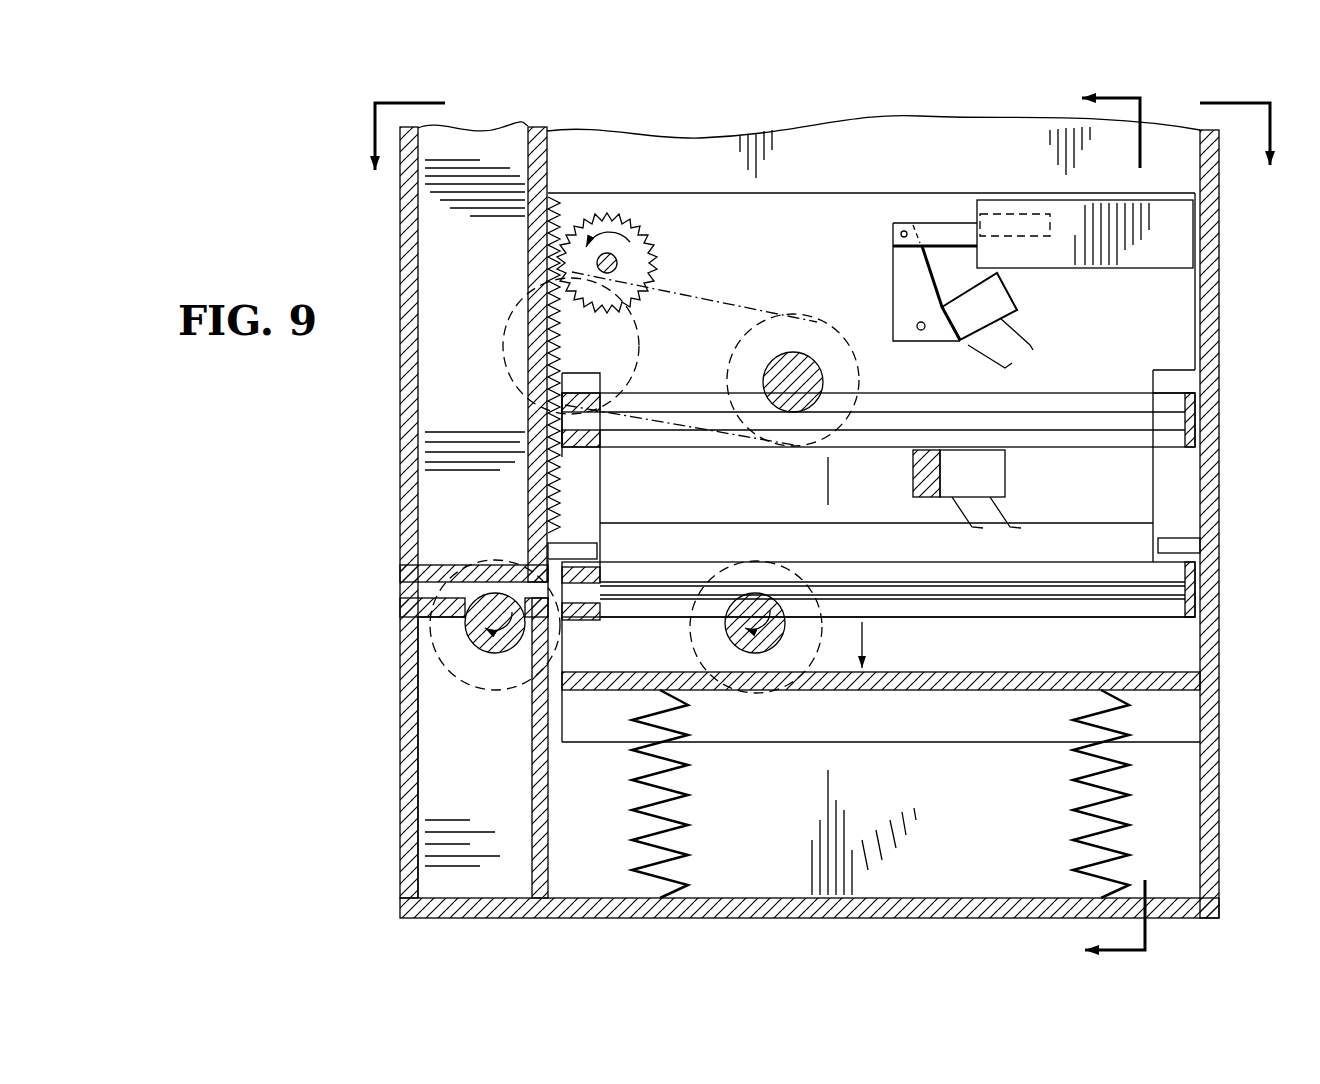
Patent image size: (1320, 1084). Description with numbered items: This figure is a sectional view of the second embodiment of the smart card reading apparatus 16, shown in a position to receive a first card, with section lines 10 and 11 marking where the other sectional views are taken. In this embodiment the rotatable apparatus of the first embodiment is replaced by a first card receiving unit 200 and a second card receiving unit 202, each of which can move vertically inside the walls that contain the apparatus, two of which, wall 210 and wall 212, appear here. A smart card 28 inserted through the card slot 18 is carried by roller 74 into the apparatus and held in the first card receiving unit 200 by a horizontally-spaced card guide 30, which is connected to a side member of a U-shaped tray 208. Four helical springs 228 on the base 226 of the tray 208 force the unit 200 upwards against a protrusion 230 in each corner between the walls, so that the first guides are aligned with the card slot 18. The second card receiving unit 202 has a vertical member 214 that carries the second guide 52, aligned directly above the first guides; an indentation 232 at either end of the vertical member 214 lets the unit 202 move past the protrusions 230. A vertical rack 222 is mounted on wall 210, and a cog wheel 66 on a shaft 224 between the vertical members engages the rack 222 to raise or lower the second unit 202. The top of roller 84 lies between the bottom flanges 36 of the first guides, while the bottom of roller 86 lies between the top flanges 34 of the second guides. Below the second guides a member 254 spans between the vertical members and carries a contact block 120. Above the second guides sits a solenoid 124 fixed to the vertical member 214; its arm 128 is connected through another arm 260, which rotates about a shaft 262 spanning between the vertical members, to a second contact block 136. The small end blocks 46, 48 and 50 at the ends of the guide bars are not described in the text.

The section line 10- 10 is at (1095, 524).
The section line 11- 11 is at (823, 151).
The card reading apparatus 16 is at (700, 140).
The card slot 18 is at (398, 590).
The smart card 28 is at (920, 590).
The card guide 30 is at (1000, 622).
The top flange 34 is at (1027, 395).
The bottom flange 36 is at (1085, 440).
The bracket 46 is at (590, 398).
The end block 48 is at (605, 445).
The end block 50 is at (1195, 410).
The second guide 52 is at (1095, 393).
The cog wheel 66 is at (645, 250).
The roller 74 is at (483, 662).
The roller 84 is at (735, 628).
The roller 86 is at (766, 375).
The contact block 120 is at (993, 473).
The solenoid 124 is at (1110, 262).
The arm 128 is at (895, 232).
The contact block 136 is at (1000, 300).
The first card receiving unit 200 is at (1170, 643).
The second card receiving unit 202 is at (812, 192).
The U-shaped tray 208 is at (963, 695).
The wall 210 is at (548, 170).
The wall 212 is at (1213, 298).
The vertical member 214 is at (918, 194).
The vertical rack 222 is at (560, 346).
The shaft 224 is at (617, 263).
The base 226 is at (875, 697).
The helical spring 228 is at (687, 862).
The protrusion 230 is at (548, 548).
The indentation 232 is at (598, 503).
The member 254 is at (915, 472).
The arm 260 is at (903, 292).
The shaft 262 is at (925, 330).